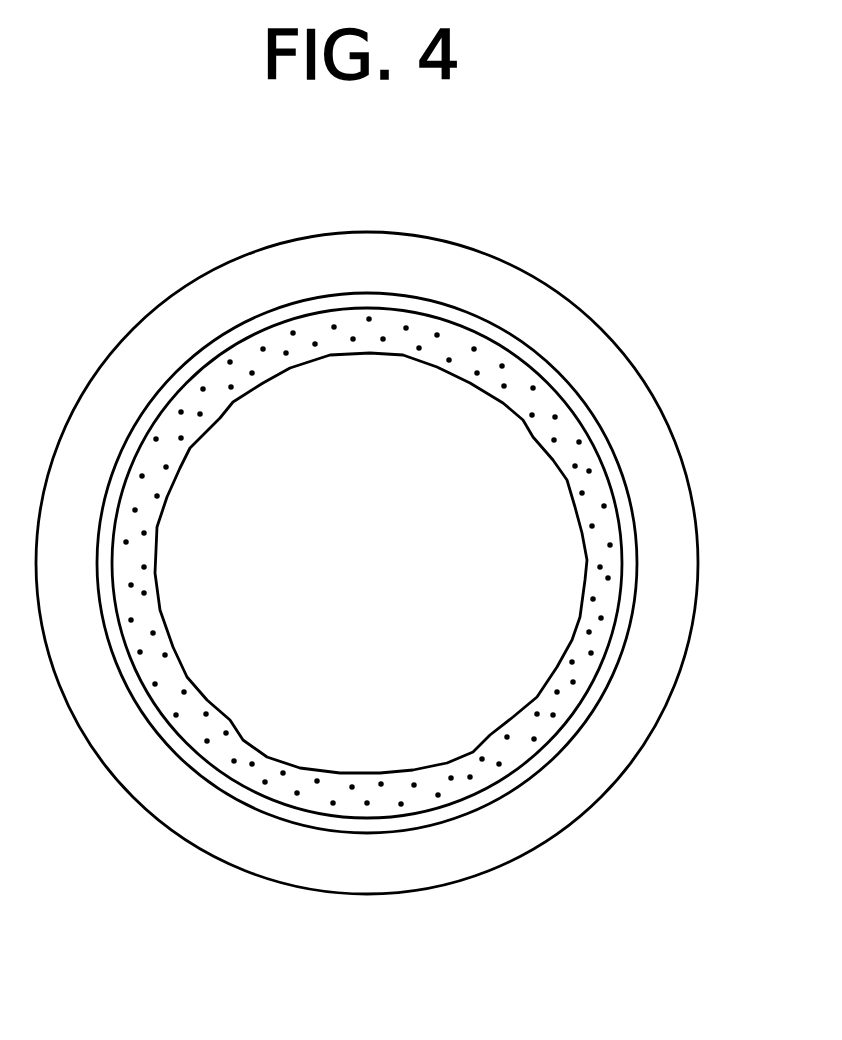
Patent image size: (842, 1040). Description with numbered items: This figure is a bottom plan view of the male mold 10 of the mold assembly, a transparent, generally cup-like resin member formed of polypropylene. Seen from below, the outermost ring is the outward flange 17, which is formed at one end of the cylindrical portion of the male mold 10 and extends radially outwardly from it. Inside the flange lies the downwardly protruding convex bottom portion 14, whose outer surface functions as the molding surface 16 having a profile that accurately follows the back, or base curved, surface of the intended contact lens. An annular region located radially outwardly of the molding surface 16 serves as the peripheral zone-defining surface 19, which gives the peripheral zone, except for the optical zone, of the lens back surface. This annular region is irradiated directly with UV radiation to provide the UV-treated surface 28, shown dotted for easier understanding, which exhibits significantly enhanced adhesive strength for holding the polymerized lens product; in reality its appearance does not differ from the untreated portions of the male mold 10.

The male mold 10 is at (563, 240).
The convex bottom portion 14 is at (451, 521).
The molding surface 16 is at (488, 423).
The outward flange 17 is at (620, 737).
The peripheral zone-defining surface 19 is at (443, 563).
The UV-treated surface 28 is at (612, 550).